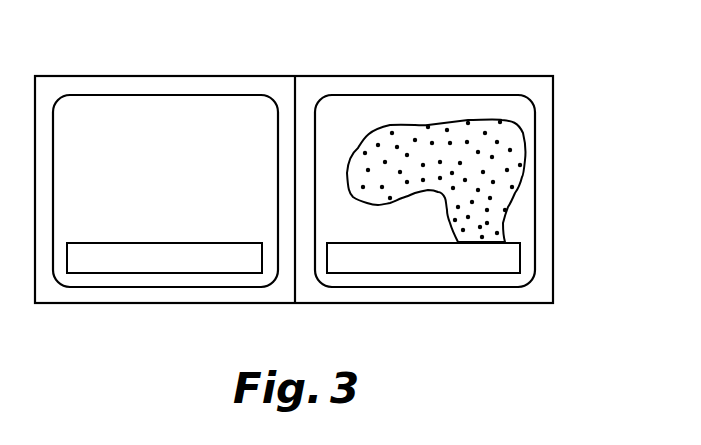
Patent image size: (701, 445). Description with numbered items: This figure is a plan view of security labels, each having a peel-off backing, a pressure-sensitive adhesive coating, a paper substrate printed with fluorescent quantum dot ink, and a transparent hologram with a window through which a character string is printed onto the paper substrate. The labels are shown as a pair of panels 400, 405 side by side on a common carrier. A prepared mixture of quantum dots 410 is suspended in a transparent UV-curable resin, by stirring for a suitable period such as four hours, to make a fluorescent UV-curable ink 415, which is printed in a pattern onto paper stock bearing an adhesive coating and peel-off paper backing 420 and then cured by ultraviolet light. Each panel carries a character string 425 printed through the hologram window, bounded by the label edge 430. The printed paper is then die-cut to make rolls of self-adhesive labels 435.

The label assembly 400 is at (299, 100).
The second label portion 405 is at (492, 103).
The quantum dots 410 is at (508, 135).
The fluorescent UV-curable ink 415 is at (526, 153).
The peel-off paper backing 420 is at (542, 185).
The identification code 425 is at (522, 244).
The label edge 430 is at (524, 283).
The self-adhesive labels 435 is at (145, 76).